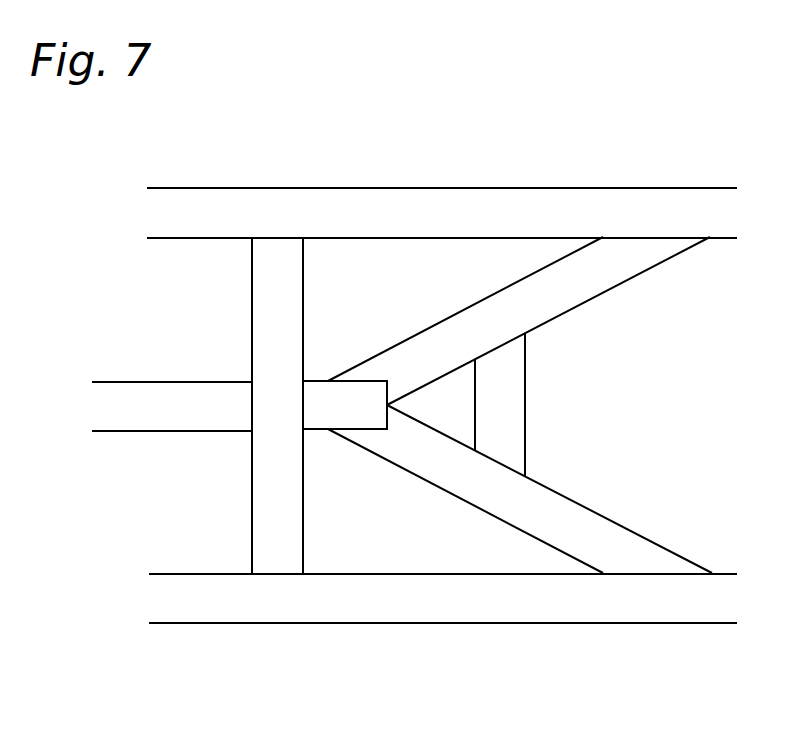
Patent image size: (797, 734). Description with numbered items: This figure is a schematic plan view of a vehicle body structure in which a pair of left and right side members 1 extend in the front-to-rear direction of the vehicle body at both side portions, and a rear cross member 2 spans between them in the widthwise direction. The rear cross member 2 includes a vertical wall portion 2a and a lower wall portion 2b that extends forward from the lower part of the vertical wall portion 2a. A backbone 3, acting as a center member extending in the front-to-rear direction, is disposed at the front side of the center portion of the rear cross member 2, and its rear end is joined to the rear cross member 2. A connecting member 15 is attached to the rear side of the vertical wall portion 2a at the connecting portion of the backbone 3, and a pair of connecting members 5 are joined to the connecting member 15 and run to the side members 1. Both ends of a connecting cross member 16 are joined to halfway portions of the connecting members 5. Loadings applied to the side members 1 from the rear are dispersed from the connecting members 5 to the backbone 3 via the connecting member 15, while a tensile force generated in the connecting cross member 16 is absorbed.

The side member 1 is at (557, 196).
The rear cross member 2 is at (258, 406).
The vertical wall portion 2a is at (303, 297).
The lower wall portion 2b is at (252, 335).
The backbone 3 is at (131, 408).
The connecting member 5 is at (595, 285).
The connecting member 15 is at (318, 410).
The connecting cross member 16 is at (513, 395).